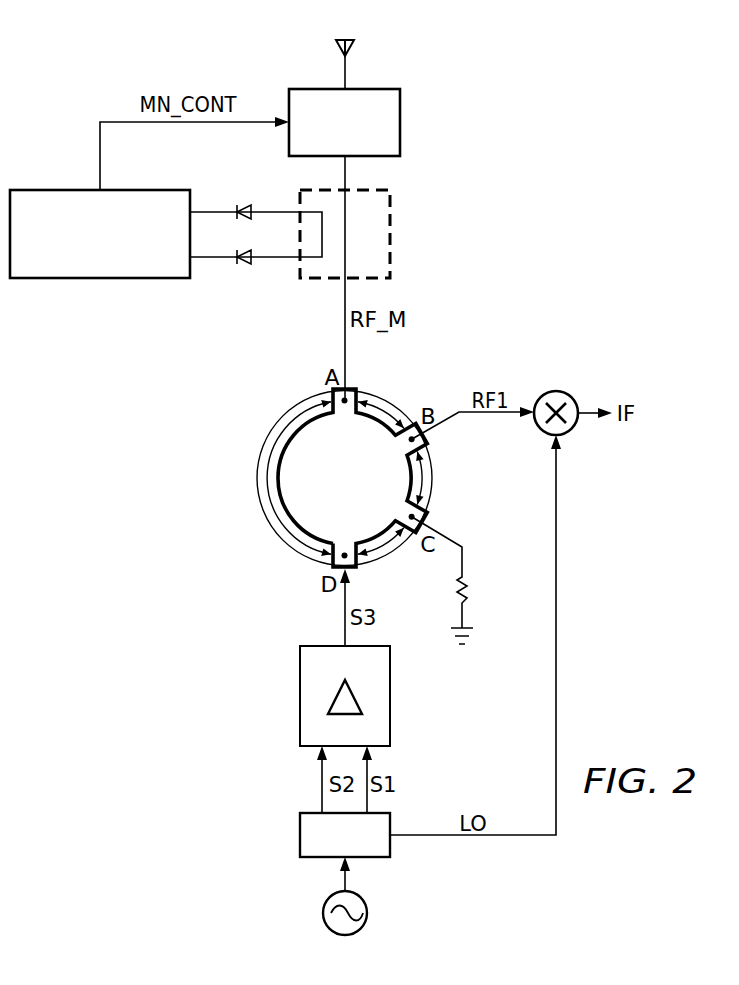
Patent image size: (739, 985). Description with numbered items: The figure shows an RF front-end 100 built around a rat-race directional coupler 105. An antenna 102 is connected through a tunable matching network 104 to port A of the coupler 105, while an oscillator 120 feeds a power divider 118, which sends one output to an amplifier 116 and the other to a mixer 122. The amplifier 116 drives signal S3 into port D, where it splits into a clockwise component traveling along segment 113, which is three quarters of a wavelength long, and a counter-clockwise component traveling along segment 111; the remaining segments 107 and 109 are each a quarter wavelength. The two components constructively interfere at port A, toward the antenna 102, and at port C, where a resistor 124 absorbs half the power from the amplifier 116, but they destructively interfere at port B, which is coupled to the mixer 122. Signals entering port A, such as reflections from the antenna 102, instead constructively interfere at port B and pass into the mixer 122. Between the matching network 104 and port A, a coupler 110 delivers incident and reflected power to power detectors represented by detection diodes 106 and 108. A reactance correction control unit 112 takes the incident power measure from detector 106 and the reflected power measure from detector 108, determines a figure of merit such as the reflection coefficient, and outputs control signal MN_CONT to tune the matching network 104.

The RF front-end 100 is at (559, 91).
The antenna 102 is at (353, 48).
The tunable matching network 104 is at (401, 118).
The directional coupler 105 is at (290, 422).
The detection diode 106 is at (240, 264).
The segment 107 is at (392, 398).
The detection diode 108 is at (240, 206).
The segment 109 is at (431, 478).
The coupler 110 is at (390, 236).
The segment 111 is at (390, 557).
The reactance correction control unit 112 is at (97, 281).
The segment 113 is at (256, 477).
The amplifier 116 is at (299, 697).
The power divider 118 is at (299, 836).
The oscillator 120 is at (365, 922).
The mixer 122 is at (555, 390).
The resistor 124 is at (470, 595).